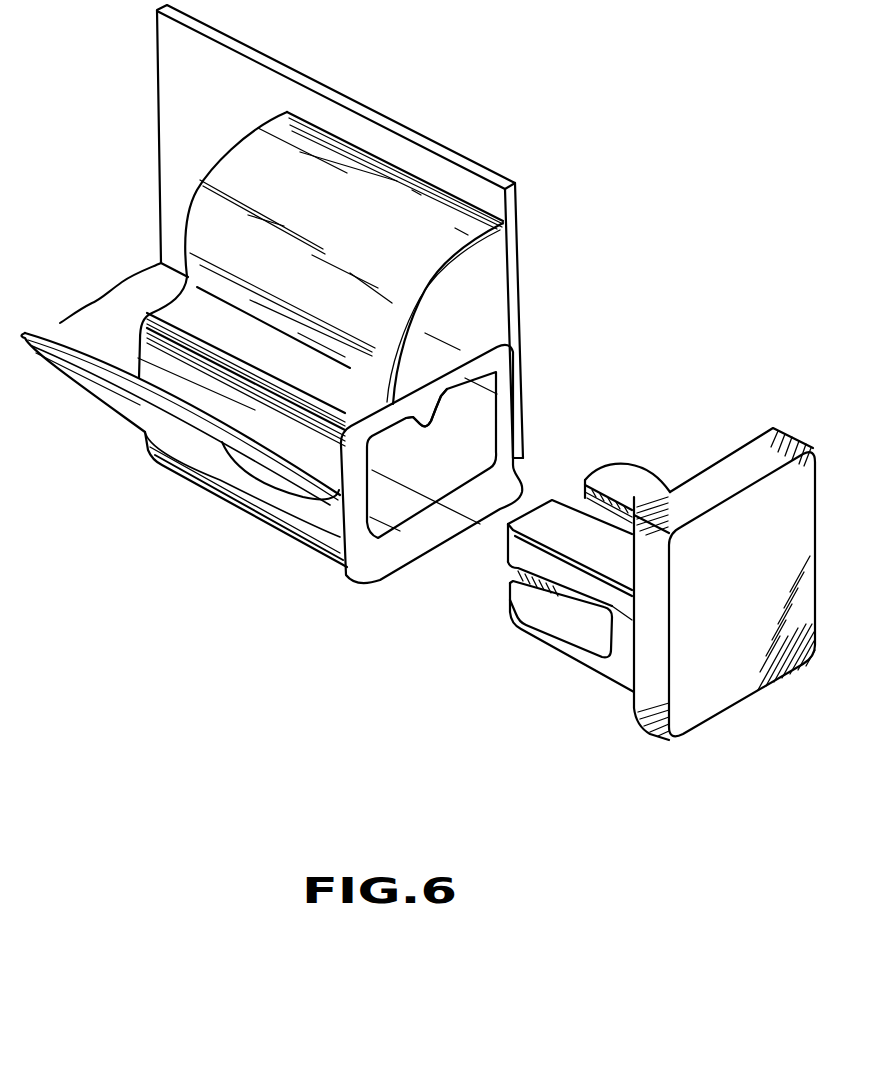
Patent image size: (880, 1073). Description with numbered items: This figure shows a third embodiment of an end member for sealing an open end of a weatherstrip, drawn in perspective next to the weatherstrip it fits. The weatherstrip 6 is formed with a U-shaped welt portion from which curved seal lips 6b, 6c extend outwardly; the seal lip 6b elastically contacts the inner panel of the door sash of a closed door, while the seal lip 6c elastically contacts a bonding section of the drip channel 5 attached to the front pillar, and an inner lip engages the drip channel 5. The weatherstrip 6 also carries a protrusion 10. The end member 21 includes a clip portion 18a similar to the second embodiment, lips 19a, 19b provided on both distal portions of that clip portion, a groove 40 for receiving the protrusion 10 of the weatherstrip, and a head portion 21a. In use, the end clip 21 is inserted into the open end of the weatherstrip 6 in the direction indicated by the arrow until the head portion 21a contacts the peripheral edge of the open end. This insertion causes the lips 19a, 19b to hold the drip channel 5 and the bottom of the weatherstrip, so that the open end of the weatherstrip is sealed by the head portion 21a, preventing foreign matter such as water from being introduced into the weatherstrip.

The drip channel 5 is at (354, 132).
The weatherstrip 6 is at (463, 363).
The seal lip 6b is at (272, 487).
The seal lip 6c is at (425, 292).
The protrusion 10 is at (422, 413).
The clip portion 18a is at (636, 480).
The lip 19a is at (507, 563).
The lip 19b is at (508, 584).
The end member 21 is at (633, 710).
The head portion 21a is at (762, 440).
The groove 40 is at (587, 479).